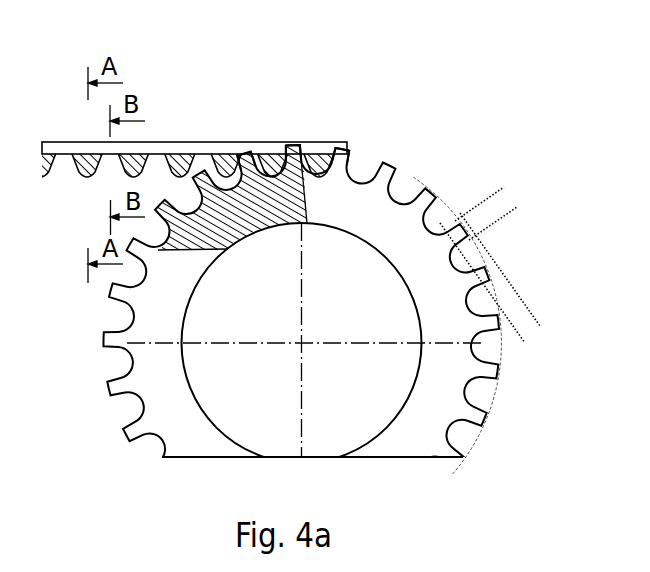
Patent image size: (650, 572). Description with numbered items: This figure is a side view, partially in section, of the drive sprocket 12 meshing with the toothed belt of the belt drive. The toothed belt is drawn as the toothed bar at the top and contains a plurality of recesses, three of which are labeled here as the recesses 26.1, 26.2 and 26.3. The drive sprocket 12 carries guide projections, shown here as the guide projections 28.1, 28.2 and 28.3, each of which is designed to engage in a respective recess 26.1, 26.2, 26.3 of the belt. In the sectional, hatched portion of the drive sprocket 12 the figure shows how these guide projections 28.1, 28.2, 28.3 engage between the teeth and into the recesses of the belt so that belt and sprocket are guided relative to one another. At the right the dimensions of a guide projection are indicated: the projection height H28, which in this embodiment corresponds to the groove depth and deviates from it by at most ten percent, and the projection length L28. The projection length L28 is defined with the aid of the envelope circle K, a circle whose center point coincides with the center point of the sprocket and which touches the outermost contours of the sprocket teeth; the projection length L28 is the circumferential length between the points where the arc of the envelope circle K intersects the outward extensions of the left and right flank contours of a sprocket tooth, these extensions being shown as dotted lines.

The drive sprocket 12 is at (512, 118).
The recess 26.1 is at (333, 147).
The recess 26.2 is at (277, 147).
The recess 26.3 is at (232, 147).
The guide projection 28.1 is at (343, 150).
The guide projection 28.2 is at (286, 148).
The guide projection 28.3 is at (243, 158).
The envelope circle K is at (476, 441).
The projection length L28 is at (470, 177).
The projection height H28 is at (497, 347).